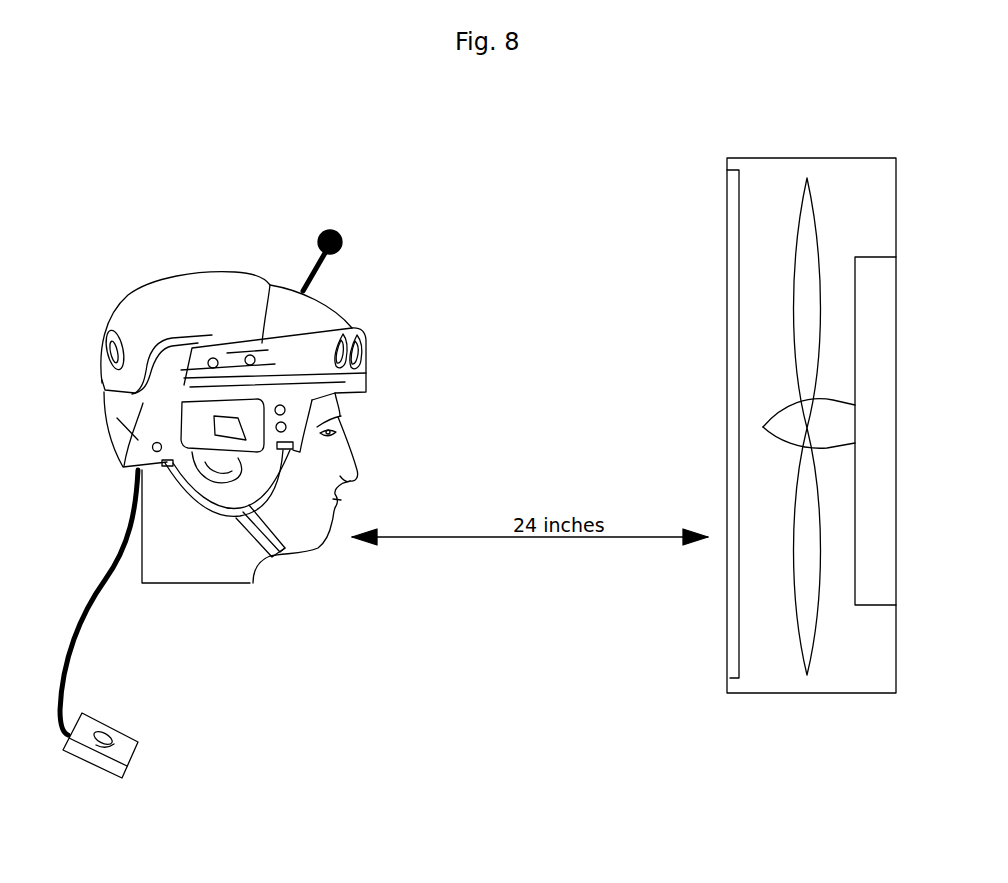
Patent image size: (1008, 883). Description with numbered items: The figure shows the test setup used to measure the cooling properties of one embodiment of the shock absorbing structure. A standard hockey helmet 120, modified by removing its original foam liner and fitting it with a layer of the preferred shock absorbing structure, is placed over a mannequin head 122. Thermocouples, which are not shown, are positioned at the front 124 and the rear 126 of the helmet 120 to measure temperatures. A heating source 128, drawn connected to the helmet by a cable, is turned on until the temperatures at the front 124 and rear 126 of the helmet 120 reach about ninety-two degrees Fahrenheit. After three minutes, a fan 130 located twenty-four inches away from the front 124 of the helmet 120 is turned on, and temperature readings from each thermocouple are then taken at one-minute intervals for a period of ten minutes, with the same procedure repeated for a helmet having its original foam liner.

The hockey helmet 120 is at (158, 280).
The mannequin head 122 is at (222, 552).
The front of the helmet 124 is at (368, 350).
The rear of the helmet 126 is at (107, 392).
The heating source 128 is at (142, 755).
The fan 130 is at (738, 693).